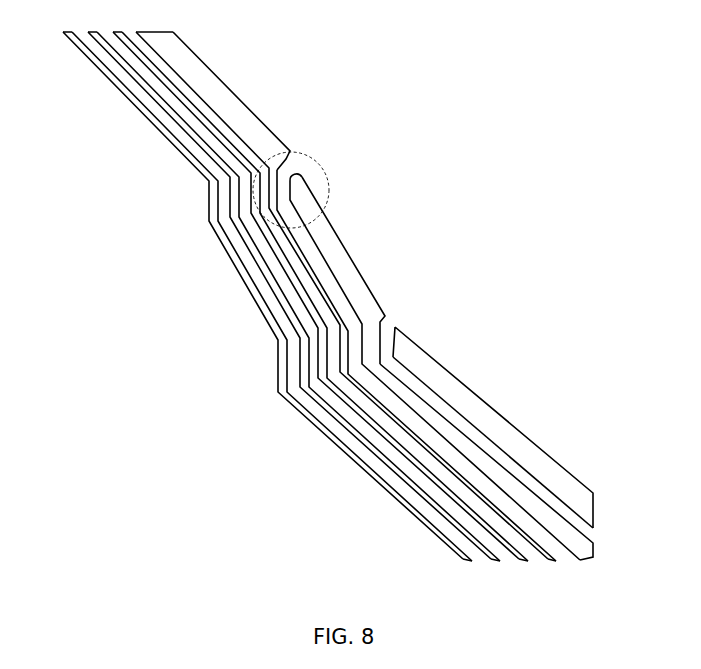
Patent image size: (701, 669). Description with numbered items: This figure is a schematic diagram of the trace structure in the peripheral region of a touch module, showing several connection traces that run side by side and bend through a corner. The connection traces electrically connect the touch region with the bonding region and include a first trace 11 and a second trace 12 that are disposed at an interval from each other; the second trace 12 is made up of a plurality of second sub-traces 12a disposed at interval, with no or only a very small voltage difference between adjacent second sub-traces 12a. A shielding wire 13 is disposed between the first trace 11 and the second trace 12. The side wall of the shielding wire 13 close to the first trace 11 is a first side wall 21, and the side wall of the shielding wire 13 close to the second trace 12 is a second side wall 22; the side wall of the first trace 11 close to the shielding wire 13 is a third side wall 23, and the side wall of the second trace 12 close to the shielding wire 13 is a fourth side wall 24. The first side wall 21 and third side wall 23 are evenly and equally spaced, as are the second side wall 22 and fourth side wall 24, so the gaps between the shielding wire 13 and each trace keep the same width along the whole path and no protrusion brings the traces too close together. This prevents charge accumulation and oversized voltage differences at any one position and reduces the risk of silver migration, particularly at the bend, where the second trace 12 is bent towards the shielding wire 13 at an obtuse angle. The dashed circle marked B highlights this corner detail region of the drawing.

The first trace 11 is at (500, 427).
The second trace 12 is at (150, 437).
The second sub-trace 12a is at (222, 92).
The shielding wire 13 is at (358, 287).
The first side wall 21 is at (400, 382).
The second side wall 22 is at (322, 243).
The third side wall 23 is at (443, 397).
The fourth side wall 24 is at (296, 203).
The detail region B is at (296, 148).